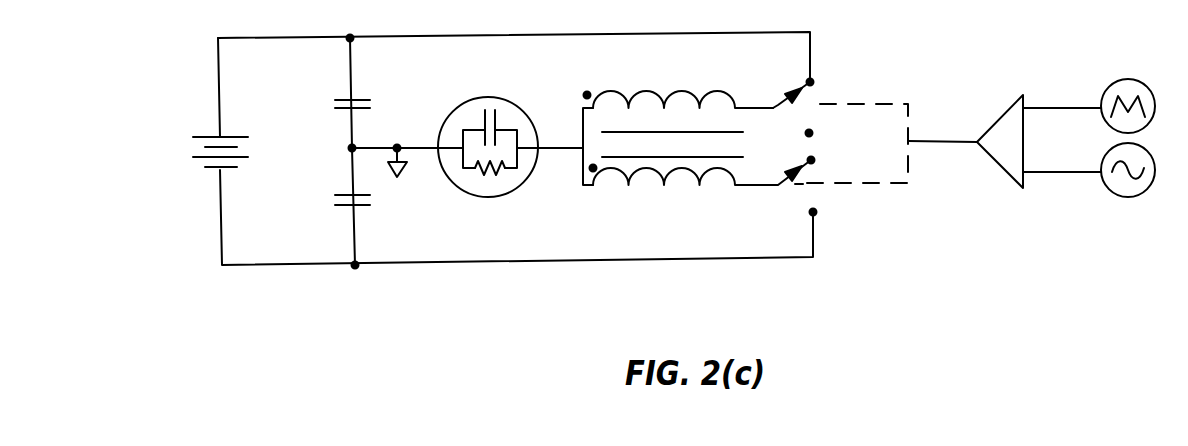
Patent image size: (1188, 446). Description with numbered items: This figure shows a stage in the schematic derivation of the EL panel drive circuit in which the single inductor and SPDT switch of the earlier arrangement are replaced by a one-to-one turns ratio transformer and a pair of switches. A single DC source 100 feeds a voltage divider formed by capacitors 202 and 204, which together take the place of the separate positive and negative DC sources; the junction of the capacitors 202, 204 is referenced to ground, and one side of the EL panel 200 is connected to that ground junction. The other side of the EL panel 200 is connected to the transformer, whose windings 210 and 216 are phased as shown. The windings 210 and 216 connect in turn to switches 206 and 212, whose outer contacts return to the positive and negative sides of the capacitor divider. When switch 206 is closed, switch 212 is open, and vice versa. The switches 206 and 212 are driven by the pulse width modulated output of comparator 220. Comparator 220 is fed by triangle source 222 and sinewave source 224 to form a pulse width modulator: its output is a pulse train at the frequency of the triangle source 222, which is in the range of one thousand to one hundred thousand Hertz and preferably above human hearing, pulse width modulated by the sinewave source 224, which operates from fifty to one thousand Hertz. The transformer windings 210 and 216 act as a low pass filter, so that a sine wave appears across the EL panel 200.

The DC source 100 is at (205, 130).
The EL panel 200 is at (466, 99).
The capacitor 202 is at (335, 96).
The capacitor 204 is at (338, 191).
The switch 206 is at (822, 82).
The transformer winding 210 is at (604, 85).
The switch 212 is at (823, 192).
The transformer winding 216 is at (605, 193).
The comparator 220 is at (997, 103).
The triangle source 222 is at (1113, 83).
The sinewave source 224 is at (1118, 195).